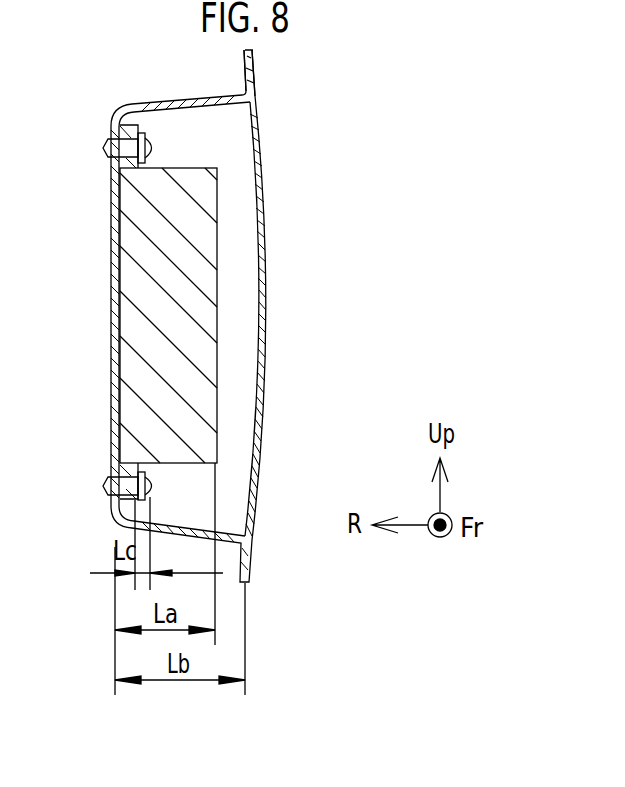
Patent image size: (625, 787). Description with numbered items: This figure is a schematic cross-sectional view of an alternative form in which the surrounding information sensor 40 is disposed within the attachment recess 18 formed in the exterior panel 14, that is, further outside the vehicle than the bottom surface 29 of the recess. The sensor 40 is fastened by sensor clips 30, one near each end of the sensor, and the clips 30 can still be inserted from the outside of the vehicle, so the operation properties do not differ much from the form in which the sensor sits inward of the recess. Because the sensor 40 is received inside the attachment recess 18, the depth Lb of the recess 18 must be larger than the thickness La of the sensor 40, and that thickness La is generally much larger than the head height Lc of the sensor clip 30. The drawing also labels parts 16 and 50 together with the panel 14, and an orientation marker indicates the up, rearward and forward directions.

The exterior panel 14 is at (254, 56).
The inner panel flange 16 is at (278, 61).
The attachment recess 18 is at (255, 347).
The bottom surface 29 is at (133, 300).
The sensor clip 30 is at (150, 141).
The surrounding information sensor 40 is at (147, 214).
The side wall 50 is at (265, 275).